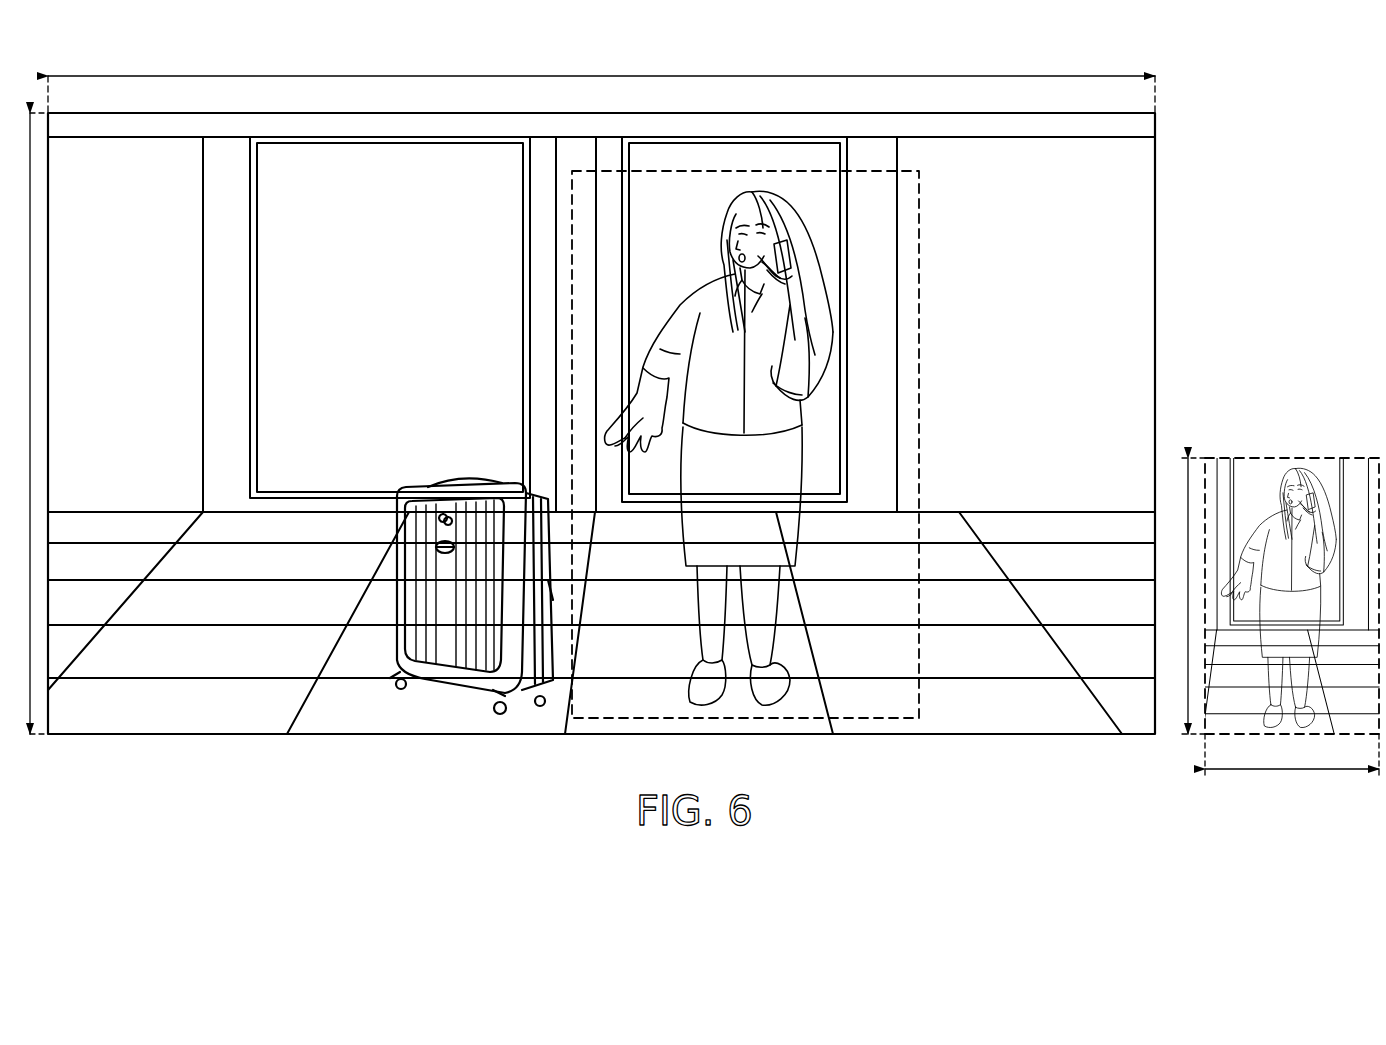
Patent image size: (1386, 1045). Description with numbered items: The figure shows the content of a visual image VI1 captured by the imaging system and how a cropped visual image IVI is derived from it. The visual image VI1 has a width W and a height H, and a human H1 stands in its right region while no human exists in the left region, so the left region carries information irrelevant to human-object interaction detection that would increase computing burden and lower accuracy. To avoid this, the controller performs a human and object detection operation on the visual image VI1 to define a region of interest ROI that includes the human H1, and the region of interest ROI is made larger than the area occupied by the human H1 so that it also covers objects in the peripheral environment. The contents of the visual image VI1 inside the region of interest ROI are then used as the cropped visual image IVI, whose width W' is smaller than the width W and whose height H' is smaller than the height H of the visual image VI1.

The width of the visual image W is at (601, 82).
The height of the visual image H is at (27, 423).
The visual image VI1 is at (1155, 170).
The human H1 is at (712, 277).
The region of interest ROI is at (862, 719).
The cropped visual image IVI is at (1272, 458).
The height of the cropped visual image H' is at (1183, 596).
The width of the cropped visual image W' is at (1292, 755).